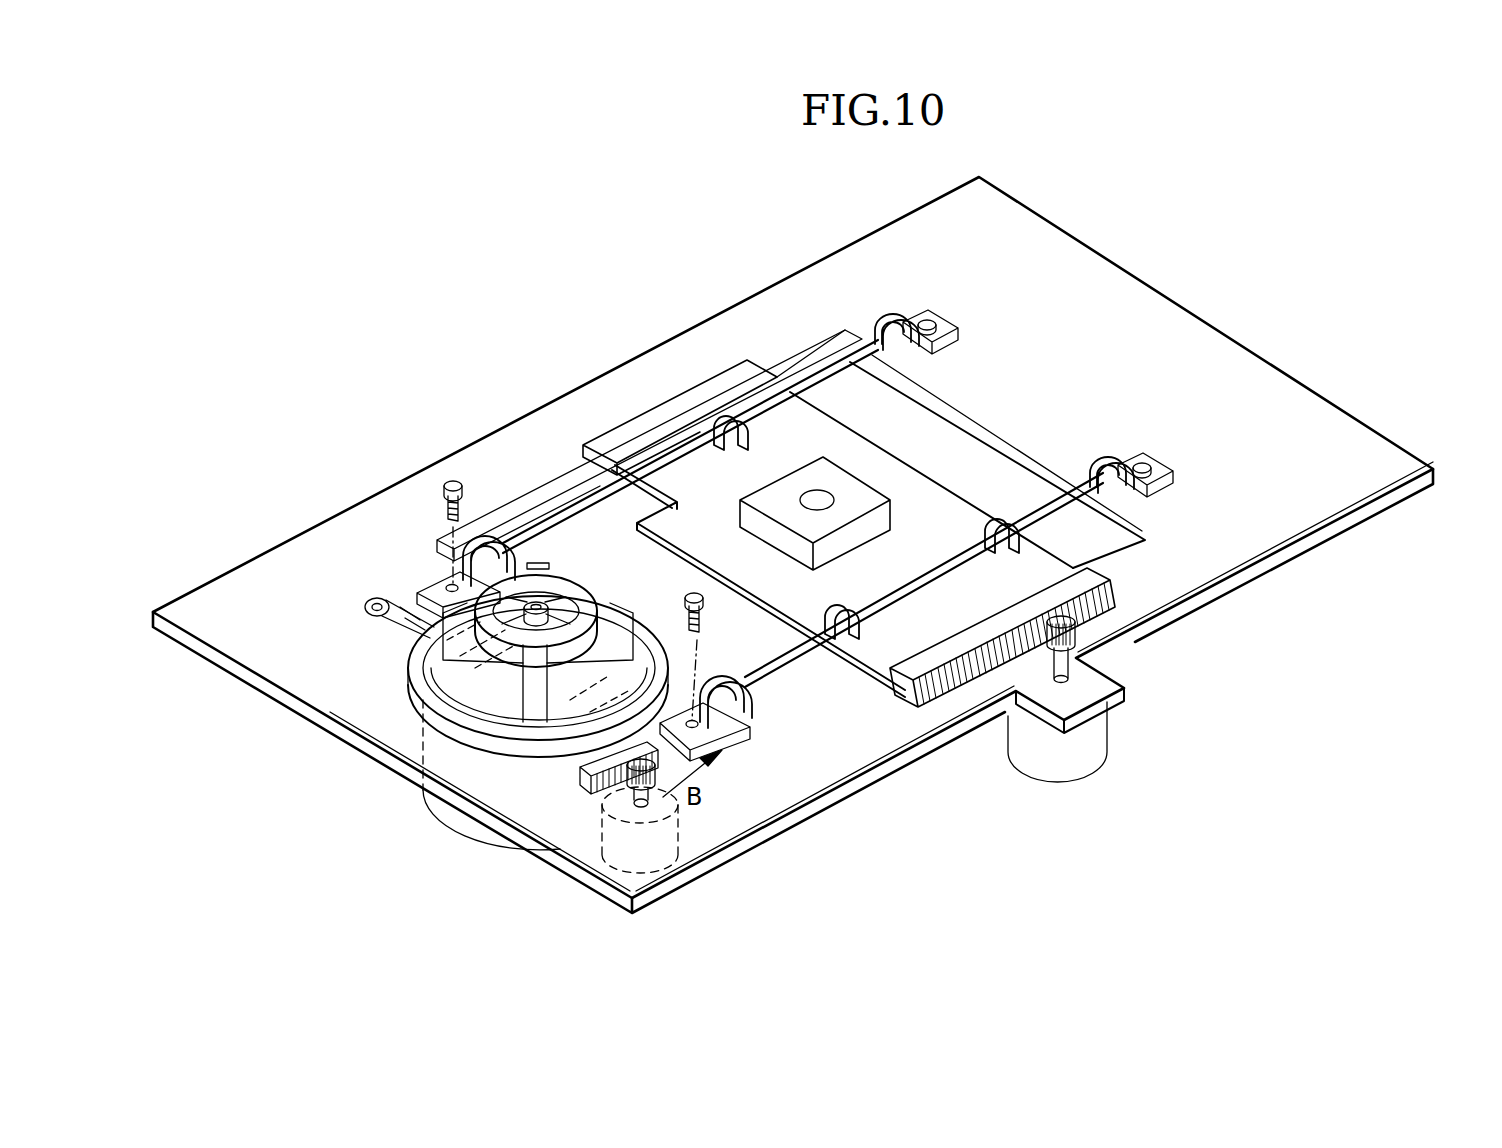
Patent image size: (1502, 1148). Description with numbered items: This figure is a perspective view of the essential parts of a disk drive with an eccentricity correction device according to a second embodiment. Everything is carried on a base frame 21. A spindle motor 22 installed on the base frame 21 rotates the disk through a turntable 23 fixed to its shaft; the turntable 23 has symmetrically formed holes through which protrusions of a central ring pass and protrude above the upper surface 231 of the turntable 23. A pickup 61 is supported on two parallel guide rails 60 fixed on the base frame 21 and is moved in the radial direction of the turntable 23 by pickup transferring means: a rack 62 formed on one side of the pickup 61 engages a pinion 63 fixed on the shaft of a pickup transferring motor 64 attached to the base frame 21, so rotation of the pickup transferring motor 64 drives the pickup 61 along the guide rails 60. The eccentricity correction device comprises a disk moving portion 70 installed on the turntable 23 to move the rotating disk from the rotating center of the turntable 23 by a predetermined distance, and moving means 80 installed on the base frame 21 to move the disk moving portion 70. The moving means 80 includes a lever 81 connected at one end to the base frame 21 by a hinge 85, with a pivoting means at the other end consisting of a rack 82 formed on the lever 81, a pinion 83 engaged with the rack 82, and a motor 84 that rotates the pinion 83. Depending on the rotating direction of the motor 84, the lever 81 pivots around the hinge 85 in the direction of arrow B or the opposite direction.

The base frame 21 is at (1378, 455).
The spindle motor 22 is at (470, 823).
The turntable 23 is at (692, 727).
The upper surface 231 is at (437, 720).
The guide rails 60 is at (1033, 509).
The pickup 61 is at (823, 507).
The rack 62 is at (965, 695).
The pinion 63 is at (1080, 634).
The pickup transferring motor 64 is at (1083, 758).
The disk moving portion 70 is at (676, 668).
The moving means 80 is at (722, 812).
The lever 81 is at (410, 692).
The rack 82 is at (590, 768).
The pinion 83 is at (652, 782).
The motor 84 is at (665, 850).
The hinge 85 is at (367, 620).